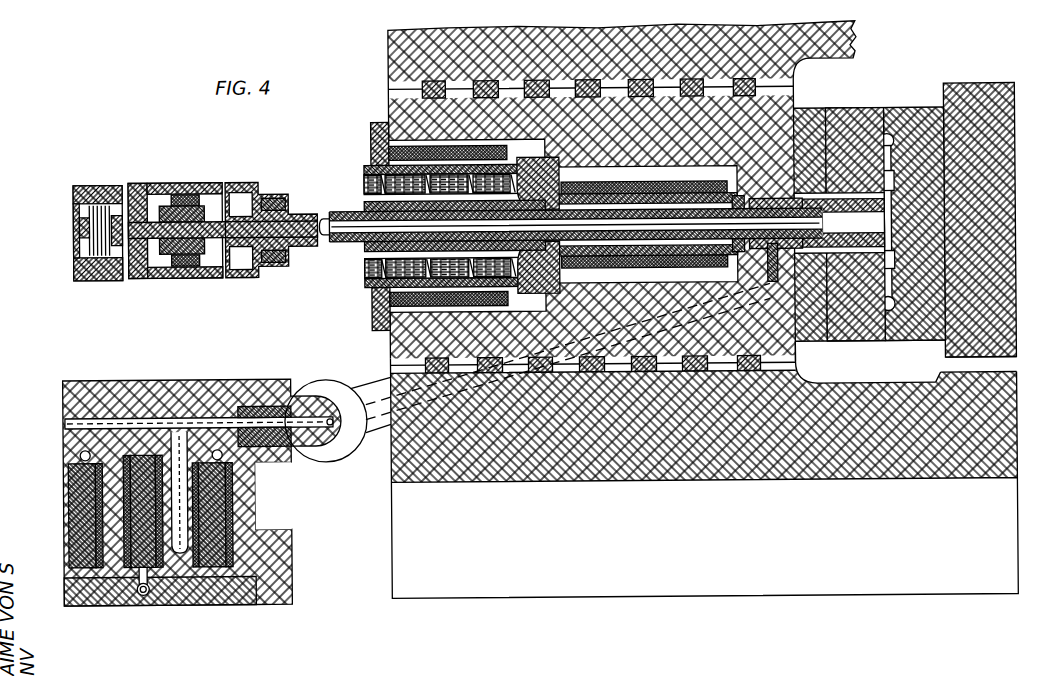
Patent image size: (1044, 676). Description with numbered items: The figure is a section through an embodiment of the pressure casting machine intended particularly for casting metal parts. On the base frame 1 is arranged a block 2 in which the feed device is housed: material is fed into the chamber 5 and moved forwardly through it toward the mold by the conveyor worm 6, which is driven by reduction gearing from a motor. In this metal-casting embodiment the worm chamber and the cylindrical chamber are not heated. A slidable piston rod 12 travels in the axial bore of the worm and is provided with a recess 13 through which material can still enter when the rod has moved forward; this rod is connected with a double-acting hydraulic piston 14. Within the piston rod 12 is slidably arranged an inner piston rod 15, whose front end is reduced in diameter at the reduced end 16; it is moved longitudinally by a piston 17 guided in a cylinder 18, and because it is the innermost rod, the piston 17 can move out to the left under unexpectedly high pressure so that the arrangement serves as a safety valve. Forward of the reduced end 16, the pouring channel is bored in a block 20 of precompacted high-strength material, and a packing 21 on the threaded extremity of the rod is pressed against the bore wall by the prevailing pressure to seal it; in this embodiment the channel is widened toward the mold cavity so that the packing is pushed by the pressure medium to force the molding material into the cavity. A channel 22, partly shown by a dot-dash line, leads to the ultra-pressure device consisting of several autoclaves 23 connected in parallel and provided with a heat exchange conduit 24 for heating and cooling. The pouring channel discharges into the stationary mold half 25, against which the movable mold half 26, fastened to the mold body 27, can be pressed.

The base frame 1 is at (407, 460).
The block 2 is at (390, 343).
The chamber 5 is at (365, 268).
The conveyor worm 6 is at (365, 179).
The piston rod 12 is at (637, 234).
The recess 13 is at (675, 198).
The piston 14 is at (190, 186).
The piston rod 15 is at (342, 242).
The reduced end 16 is at (738, 196).
The piston 17 is at (80, 252).
The cylinder 18 is at (108, 275).
The block 20 is at (757, 200).
The packing 21 is at (770, 282).
The channel 22 is at (303, 389).
The autoclaves 23 is at (196, 574).
The heat exchange conduit 24 is at (141, 592).
The stationary mold half 25 is at (852, 109).
The movable mold half 26 is at (912, 109).
The mold body 27 is at (990, 77).